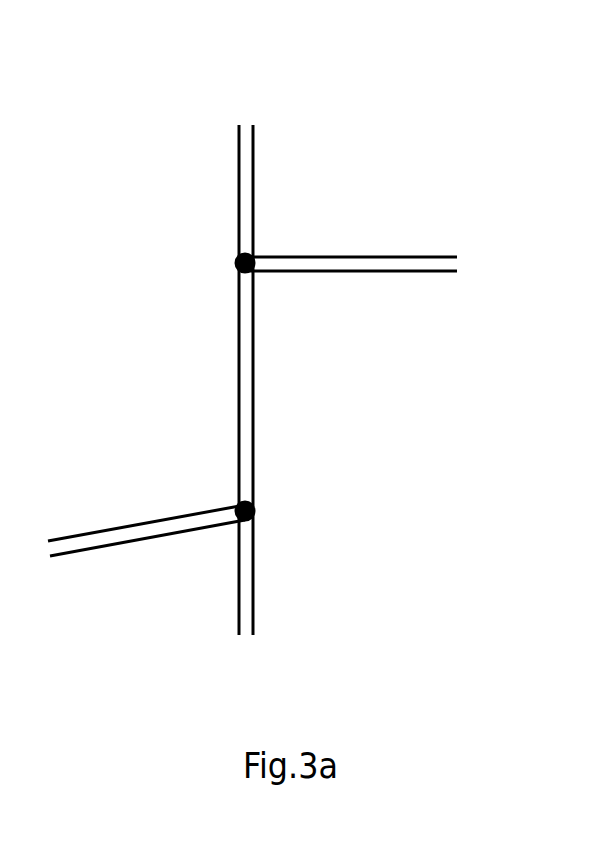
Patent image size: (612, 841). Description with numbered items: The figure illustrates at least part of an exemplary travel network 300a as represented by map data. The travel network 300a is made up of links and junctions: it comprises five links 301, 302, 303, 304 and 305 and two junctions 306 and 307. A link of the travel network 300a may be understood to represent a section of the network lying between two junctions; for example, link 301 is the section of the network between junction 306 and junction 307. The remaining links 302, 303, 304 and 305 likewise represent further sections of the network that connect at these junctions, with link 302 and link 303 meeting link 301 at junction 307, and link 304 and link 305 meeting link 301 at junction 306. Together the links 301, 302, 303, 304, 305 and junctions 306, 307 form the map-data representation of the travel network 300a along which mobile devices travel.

The travel network 300a is at (436, 104).
The link 301 is at (254, 380).
The link 302 is at (254, 180).
The link 303 is at (373, 256).
The link 304 is at (254, 582).
The link 305 is at (142, 522).
The junction 306 is at (256, 512).
The junction 307 is at (236, 262).